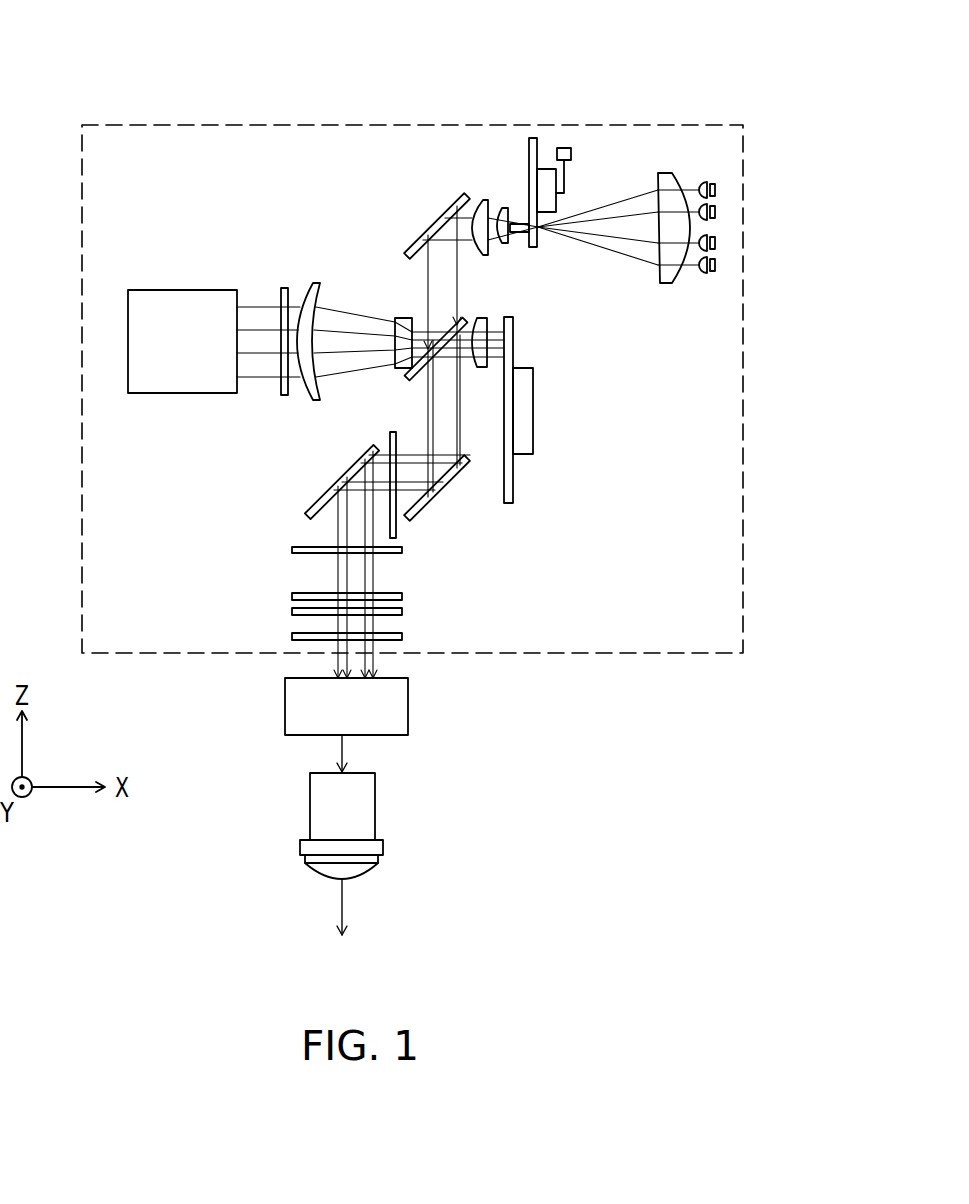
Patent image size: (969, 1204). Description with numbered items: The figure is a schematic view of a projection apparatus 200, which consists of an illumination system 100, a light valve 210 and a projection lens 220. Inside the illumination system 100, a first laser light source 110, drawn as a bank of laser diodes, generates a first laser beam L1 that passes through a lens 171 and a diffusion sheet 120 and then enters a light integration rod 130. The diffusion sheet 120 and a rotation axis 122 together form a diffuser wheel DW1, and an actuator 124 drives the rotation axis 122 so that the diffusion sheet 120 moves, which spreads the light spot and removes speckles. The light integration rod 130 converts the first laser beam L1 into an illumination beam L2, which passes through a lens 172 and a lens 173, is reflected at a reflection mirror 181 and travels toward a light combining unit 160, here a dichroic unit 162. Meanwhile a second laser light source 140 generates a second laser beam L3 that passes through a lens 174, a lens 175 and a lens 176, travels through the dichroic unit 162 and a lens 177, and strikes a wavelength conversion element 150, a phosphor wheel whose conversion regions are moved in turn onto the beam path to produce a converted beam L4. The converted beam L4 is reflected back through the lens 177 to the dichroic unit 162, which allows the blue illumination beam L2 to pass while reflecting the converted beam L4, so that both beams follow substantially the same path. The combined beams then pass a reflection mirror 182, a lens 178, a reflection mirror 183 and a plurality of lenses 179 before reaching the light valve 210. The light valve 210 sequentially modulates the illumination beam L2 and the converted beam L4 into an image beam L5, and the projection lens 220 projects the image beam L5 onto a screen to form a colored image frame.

The illumination system 100 is at (706, 120).
The first laser light source 110 is at (700, 272).
The diffuser wheel DW1 is at (480, 70).
The diffusion sheet 120 is at (530, 142).
The rotation axis 122 is at (542, 172).
The actuator 124 is at (567, 148).
The light integration rod 130 is at (524, 226).
The second laser light source 140 is at (191, 395).
The wavelength conversion element 150 is at (510, 347).
The light combining unit 160 is at (400, 369).
The dichroic unit 162 is at (411, 374).
The lens 171 is at (665, 285).
The lens 172 is at (505, 244).
The lens 173 is at (480, 203).
The lens 174 is at (285, 393).
The lens 175 is at (318, 402).
The lens 176 is at (395, 322).
The lens 177 is at (481, 368).
The lens 178 is at (396, 527).
The lenses 179 is at (293, 550).
The reflection mirror 181 is at (430, 233).
The reflection mirror 182 is at (447, 478).
The reflection mirror 183 is at (307, 510).
The projection apparatus 200 is at (735, 927).
The light valve 210 is at (390, 703).
The projection lens 220 is at (357, 812).
The first laser beam L1 is at (617, 202).
The illumination beam L2 is at (457, 262).
The second laser beam L3 is at (263, 307).
The converted beam L4 is at (452, 342).
The image beam L5 is at (342, 748).